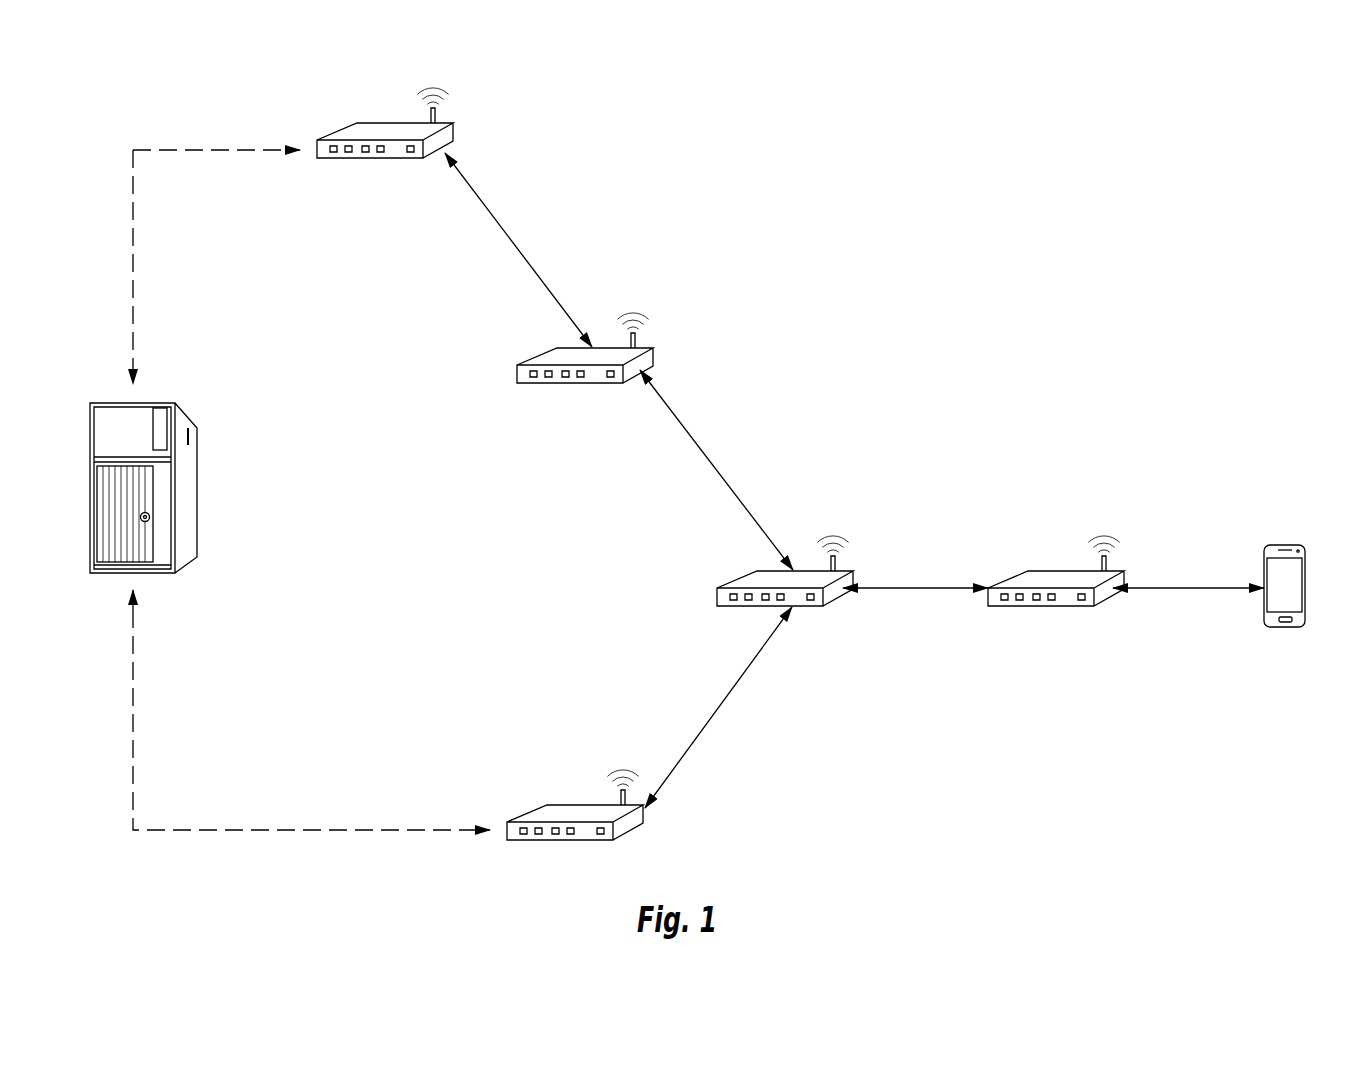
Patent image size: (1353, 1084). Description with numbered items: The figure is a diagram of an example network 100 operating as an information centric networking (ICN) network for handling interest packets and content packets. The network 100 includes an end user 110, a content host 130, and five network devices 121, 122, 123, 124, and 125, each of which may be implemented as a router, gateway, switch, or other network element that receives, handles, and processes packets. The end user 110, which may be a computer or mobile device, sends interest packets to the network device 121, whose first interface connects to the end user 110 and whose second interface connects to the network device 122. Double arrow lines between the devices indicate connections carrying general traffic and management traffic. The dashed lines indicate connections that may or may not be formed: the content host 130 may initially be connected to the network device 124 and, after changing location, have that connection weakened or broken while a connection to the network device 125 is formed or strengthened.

The network 100 is at (1222, 130).
The end user 110 is at (1262, 617).
The network device 121 is at (1078, 606).
The network device 122 is at (805, 606).
The network device 123 is at (560, 383).
The network device 124 is at (387, 122).
The network device 125 is at (595, 841).
The content host 130 is at (160, 402).